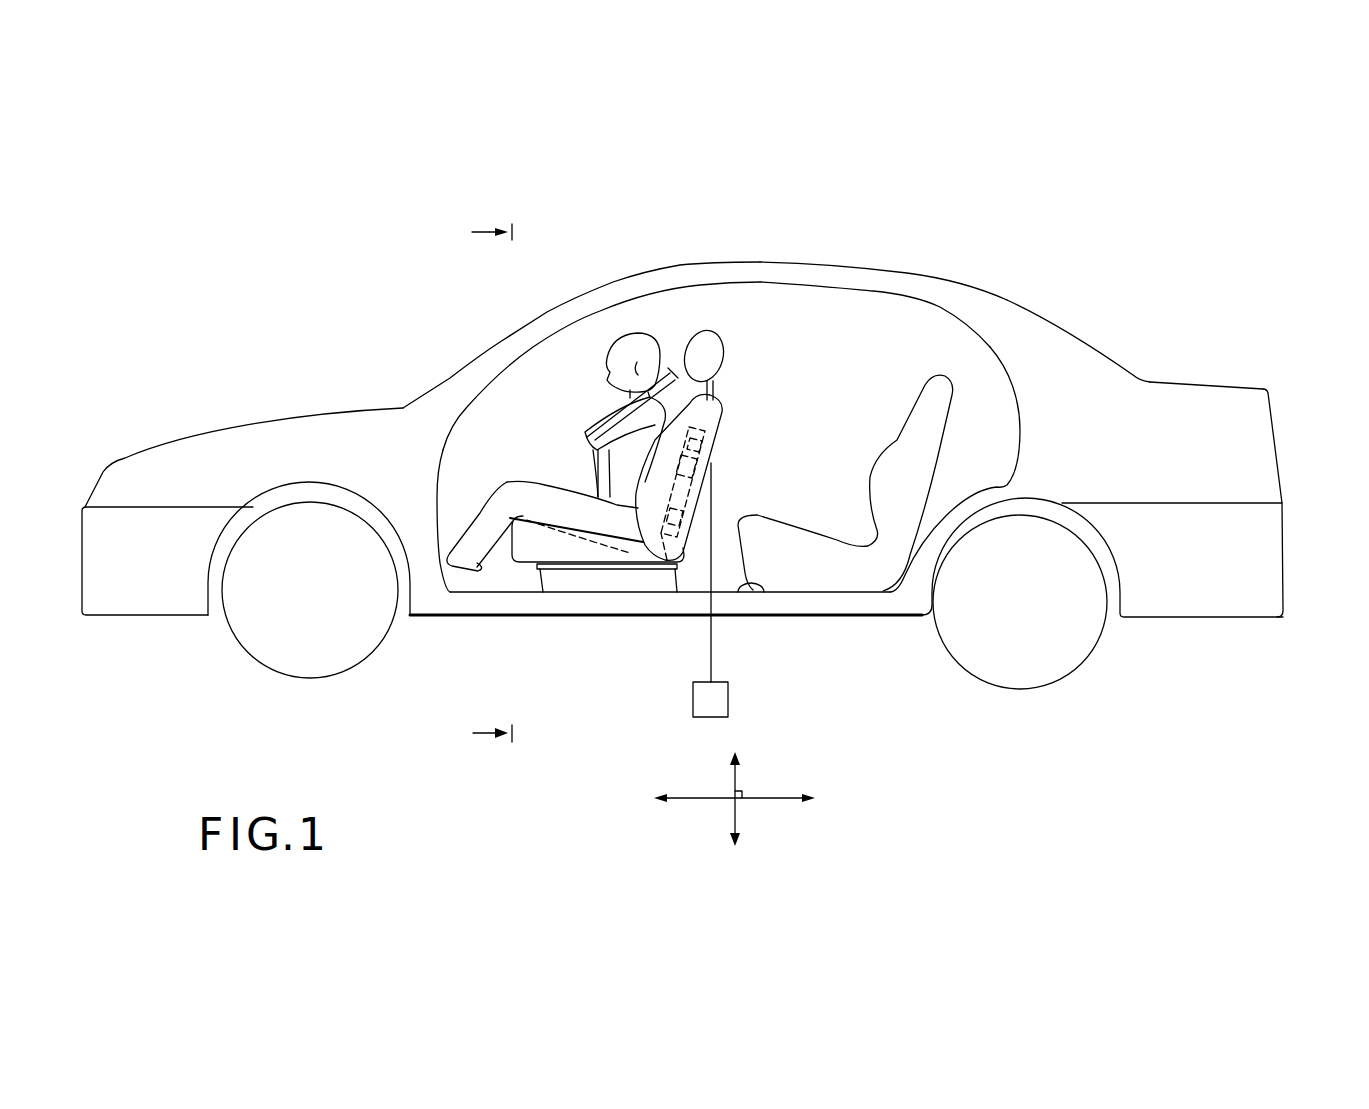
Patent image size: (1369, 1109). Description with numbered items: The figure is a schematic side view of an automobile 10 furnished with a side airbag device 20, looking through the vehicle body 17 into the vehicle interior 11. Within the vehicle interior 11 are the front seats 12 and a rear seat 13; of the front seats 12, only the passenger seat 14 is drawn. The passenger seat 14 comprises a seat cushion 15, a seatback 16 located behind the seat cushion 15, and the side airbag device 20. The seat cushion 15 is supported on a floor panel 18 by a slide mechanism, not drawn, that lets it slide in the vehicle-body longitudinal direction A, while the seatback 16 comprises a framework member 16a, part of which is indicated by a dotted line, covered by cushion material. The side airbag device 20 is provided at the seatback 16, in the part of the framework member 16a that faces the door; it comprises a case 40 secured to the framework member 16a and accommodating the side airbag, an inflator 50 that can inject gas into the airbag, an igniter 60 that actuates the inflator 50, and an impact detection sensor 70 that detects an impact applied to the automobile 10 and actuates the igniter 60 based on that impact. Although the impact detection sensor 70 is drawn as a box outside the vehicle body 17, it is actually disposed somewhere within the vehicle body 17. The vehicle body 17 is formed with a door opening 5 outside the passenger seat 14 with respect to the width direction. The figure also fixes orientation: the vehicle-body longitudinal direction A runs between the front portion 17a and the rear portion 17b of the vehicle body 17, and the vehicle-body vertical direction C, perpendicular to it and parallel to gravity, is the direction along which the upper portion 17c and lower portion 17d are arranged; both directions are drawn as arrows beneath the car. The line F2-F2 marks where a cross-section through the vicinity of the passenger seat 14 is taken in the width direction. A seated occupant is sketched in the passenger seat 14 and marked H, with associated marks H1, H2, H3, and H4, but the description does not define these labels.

The door opening 5 is at (537, 402).
The automobile 10 is at (797, 235).
The vehicle interior 11 is at (912, 315).
The front seats 12 is at (690, 313).
The rear seat 13 is at (957, 370).
The passenger seat 14 is at (728, 402).
The seat cushion 15 is at (603, 569).
The seatback 16 is at (712, 430).
The framework member 16a is at (667, 560).
The vehicle body 17 is at (1133, 385).
The front portion 17a is at (200, 457).
The rear portion 17b is at (1253, 400).
The upper portion 17c is at (845, 283).
The lower portion 17d is at (842, 605).
The floor panel 18 is at (762, 598).
The side airbag device 20 is at (703, 478).
The case 40 is at (693, 507).
The inflator 50 is at (708, 468).
The igniter 60 is at (712, 460).
The impact detection sensor 70 is at (702, 705).
The occupant H is at (618, 333).
The hip point of occupant H1 is at (593, 545).
The chest of occupant H2 is at (607, 427).
The arm of occupant H3 is at (587, 437).
The shoulder of occupant H4 is at (675, 384).
The line F2- F2 is at (488, 470).
The vehicle-body longitudinal direction A is at (773, 795).
The vehicle-body vertical direction C is at (738, 818).